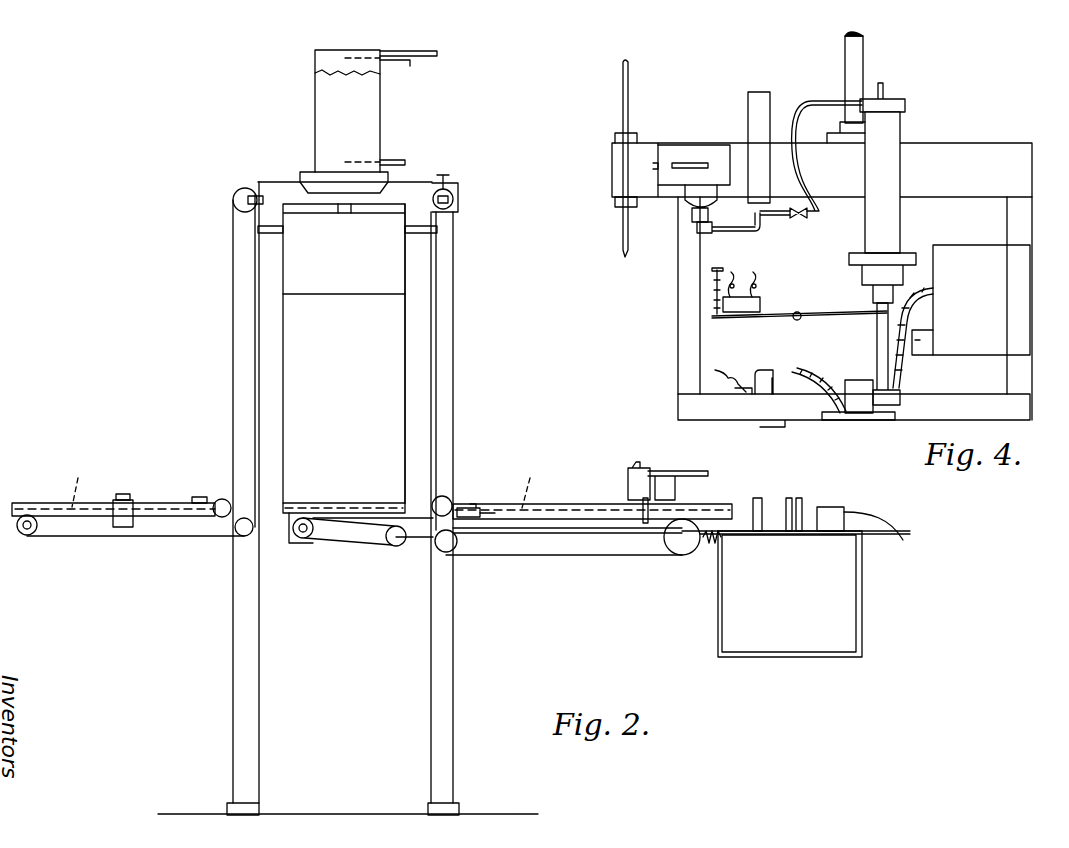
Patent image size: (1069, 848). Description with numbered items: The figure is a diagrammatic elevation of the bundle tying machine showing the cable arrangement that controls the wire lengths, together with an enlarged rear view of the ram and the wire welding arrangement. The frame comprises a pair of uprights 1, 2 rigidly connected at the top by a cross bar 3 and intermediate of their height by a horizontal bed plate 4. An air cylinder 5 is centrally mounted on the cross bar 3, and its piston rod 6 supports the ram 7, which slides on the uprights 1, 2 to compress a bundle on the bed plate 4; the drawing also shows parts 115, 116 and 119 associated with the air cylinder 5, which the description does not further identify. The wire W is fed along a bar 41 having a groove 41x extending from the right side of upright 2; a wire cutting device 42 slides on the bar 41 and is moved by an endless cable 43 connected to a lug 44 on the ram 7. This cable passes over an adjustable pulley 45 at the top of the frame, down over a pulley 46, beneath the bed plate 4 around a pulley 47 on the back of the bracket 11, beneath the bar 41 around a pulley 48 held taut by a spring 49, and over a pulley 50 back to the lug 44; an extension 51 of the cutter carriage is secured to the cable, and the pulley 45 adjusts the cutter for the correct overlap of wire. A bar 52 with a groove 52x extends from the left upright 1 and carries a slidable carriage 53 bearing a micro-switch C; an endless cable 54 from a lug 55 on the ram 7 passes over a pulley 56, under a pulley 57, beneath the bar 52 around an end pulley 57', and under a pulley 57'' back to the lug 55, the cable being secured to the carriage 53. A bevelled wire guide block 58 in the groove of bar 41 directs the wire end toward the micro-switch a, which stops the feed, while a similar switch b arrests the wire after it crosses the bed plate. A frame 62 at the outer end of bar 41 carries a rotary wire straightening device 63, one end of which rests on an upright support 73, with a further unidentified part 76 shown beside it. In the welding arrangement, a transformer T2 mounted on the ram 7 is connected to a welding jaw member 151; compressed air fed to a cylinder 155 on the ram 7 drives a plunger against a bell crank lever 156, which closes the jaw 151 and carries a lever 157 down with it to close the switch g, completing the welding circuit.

In FIG. 2, the upright 1 is at (278, 365).
In FIG. 2, the upright 2 is at (412, 383).
In FIG. 2, the cross bar 3 is at (286, 185).
In FIG. 2, the bed plate 4 is at (350, 502).
In FIG. 2, the air cylinder 5 is at (364, 112).
In FIG. 2, the piston rod 6 is at (347, 215).
In FIG. 4, the piston rod 6 is at (863, 57).
In FIG. 2, the ram 7 is at (380, 296).
In FIG. 4, the ram 7 is at (670, 400).
In FIG. 2, the bracket 11 is at (355, 545).
In FIG. 2, the bar 41 is at (540, 503).
In FIG. 2, the groove 41x is at (532, 477).
In FIG. 2, the wire cutting device 42 is at (675, 472).
In FIG. 2, the endless cable 43 is at (570, 522).
In FIG. 2, the lug 44 is at (437, 232).
In FIG. 2, the pulley 45 is at (458, 200).
In FIG. 2, the pulley 46 is at (450, 500).
In FIG. 2, the pulley 47 is at (310, 535).
In FIG. 2, the pulley 48 is at (686, 555).
In FIG. 2, the spring 49 is at (710, 545).
In FIG. 2, the pulley 50 is at (450, 552).
In FIG. 2, the extension 51 is at (640, 506).
In FIG. 2, the bar 52 is at (55, 490).
In FIG. 2, the groove 52x is at (80, 476).
In FIG. 2, the carriage 53 is at (112, 505).
In FIG. 2, the endless cable 54 is at (231, 377).
In FIG. 4, the endless cable 54 is at (622, 93).
In FIG. 2, the lug 55 is at (268, 232).
In FIG. 2, the pulley 56 is at (233, 198).
In FIG. 2, the pulley 57 is at (222, 492).
In FIG. 2, the end pulley 57' is at (30, 540).
In FIG. 2, the pulley 57'' is at (229, 542).
In FIG. 2, the bevelled wire guide block 58 is at (475, 505).
In FIG. 2, the frame 62 is at (862, 555).
In FIG. 2, the rotary wire straightening device 63 is at (840, 505).
In FIG. 2, the upright support 73 is at (800, 497).
In FIG. 2, the post 76 is at (757, 497).
In FIG. 2, the plate 115 is at (405, 160).
In FIG. 2, the bracket 116 is at (410, 66).
In FIG. 2, the arm 119 is at (430, 50).
In FIG. 4, the welding jaw member 151 is at (858, 380).
In FIG. 4, the cylinder 155 is at (902, 130).
In FIG. 4, the bell crank lever 156 is at (877, 345).
In FIG. 4, the lever 157 is at (826, 312).
In FIG. 2, the micro-switch a is at (493, 515).
In FIG. 2, the switch b is at (196, 496).
In FIG. 2, the micro-switch C is at (128, 492).
In FIG. 4, the switch g is at (758, 298).
In FIG. 2, the wire W is at (890, 518).
In FIG. 4, the transformer T2 is at (971, 300).